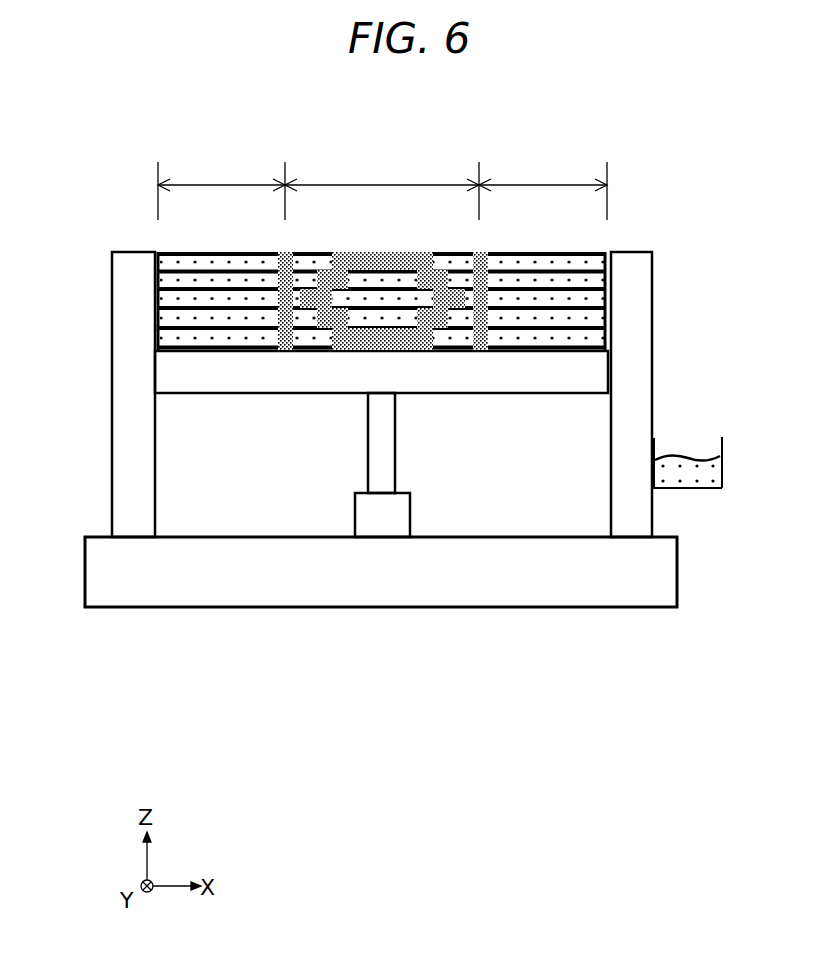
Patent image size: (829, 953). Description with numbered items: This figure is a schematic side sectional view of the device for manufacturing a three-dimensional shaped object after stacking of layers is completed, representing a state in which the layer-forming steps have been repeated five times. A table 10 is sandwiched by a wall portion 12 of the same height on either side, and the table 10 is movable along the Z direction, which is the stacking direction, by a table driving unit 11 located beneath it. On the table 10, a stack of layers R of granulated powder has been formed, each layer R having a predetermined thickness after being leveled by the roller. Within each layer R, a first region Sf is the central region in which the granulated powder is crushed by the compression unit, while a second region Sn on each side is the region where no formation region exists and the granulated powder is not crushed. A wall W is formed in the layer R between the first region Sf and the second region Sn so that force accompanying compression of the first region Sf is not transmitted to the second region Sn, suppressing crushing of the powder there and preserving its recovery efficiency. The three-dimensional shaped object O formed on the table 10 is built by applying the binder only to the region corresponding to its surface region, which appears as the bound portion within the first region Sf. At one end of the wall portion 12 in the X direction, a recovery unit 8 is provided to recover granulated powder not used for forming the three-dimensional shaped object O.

The recovery unit 8 is at (723, 463).
The table 10 is at (250, 383).
The table driving unit 11 is at (355, 505).
The wall portion 12 is at (112, 358).
The layer R is at (607, 243).
The wall W is at (284, 340).
The three-dimensional shaped object O is at (420, 350).
The second region Sn is at (382, 183).
The first region Sf is at (382, 183).